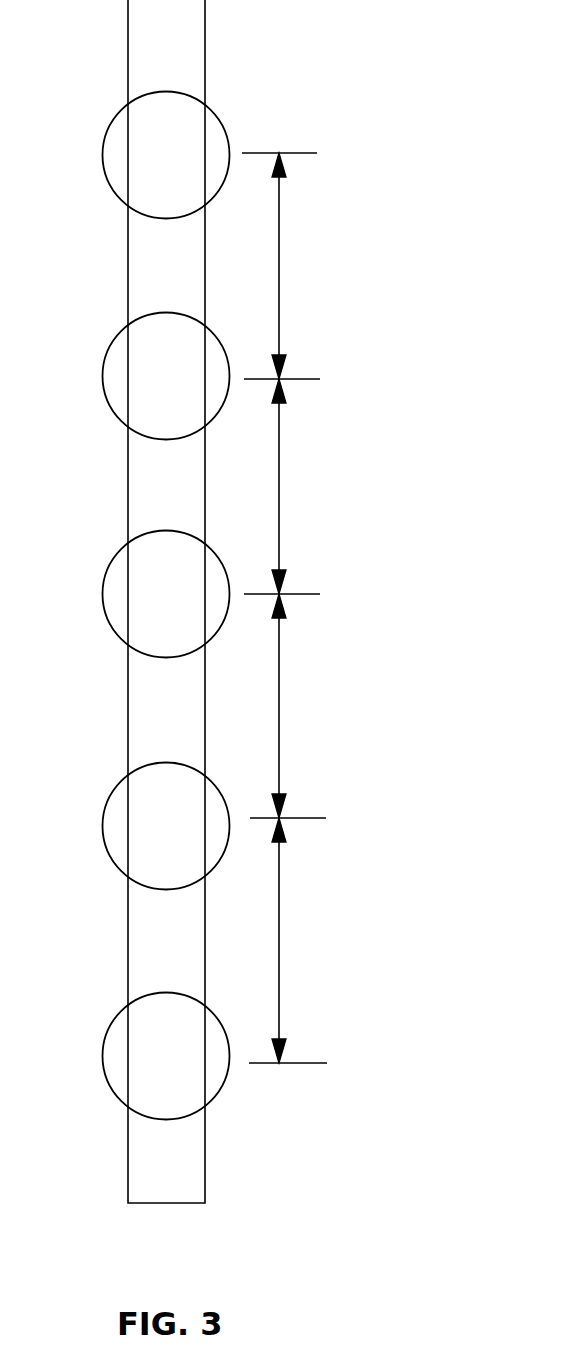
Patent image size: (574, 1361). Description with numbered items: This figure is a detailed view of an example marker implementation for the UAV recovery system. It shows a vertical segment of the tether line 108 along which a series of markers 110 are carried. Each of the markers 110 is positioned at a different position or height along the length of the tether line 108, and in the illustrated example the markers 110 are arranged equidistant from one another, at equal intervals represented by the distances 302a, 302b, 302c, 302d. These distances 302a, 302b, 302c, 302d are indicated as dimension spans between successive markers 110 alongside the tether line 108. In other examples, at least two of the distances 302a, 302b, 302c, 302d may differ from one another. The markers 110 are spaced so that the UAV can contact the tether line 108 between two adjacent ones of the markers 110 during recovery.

The tether line 108 is at (165, 40).
The markers 110 is at (125, 162).
The distance 302a is at (279, 272).
The distance 302b is at (279, 470).
The distance 302c is at (279, 705).
The distance 302d is at (279, 957).